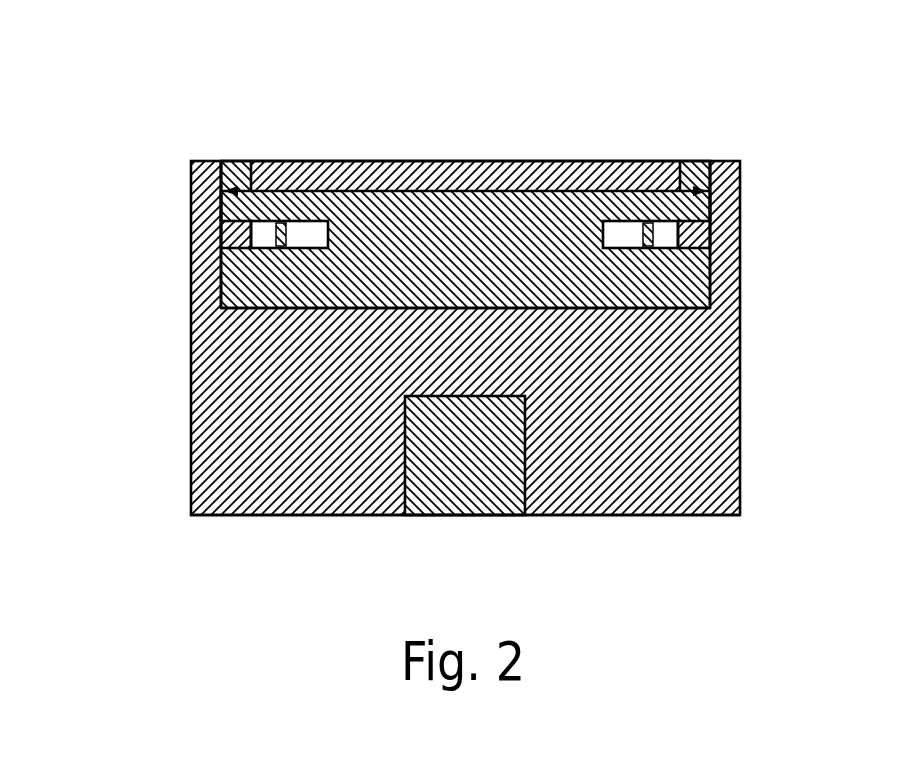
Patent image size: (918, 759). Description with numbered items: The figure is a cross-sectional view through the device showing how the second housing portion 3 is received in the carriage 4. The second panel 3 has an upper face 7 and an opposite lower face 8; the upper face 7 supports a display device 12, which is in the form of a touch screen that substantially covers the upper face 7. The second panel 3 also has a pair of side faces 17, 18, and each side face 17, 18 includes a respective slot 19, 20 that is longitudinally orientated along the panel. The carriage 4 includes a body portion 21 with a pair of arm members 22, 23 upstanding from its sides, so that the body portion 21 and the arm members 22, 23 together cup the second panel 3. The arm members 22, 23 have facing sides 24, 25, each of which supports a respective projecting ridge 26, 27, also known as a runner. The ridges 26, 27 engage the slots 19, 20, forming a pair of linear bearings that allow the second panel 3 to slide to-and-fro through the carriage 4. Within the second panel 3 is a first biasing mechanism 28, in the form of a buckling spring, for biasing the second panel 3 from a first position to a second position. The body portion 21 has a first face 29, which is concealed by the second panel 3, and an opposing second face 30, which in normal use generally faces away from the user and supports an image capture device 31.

The second housing portion 3 is at (510, 215).
The carriage 4 is at (712, 428).
The upper face 7 is at (460, 138).
The lower face 8 is at (676, 315).
The display device 12 is at (558, 153).
The side face 17 is at (198, 276).
The side face 18 is at (719, 276).
The slot 19 is at (198, 205).
The slot 20 is at (719, 204).
The body portion 21 is at (300, 387).
The arm member 22 is at (210, 182).
The arm member 23 is at (718, 180).
The facing side 24 is at (259, 168).
The facing side 25 is at (655, 162).
The projecting ridge 26 is at (225, 225).
The projecting ridge 27 is at (690, 225).
The first biasing mechanism 28 is at (282, 226).
The first face 29 is at (581, 523).
The second face 30 is at (255, 283).
The image capture device 31 is at (458, 495).